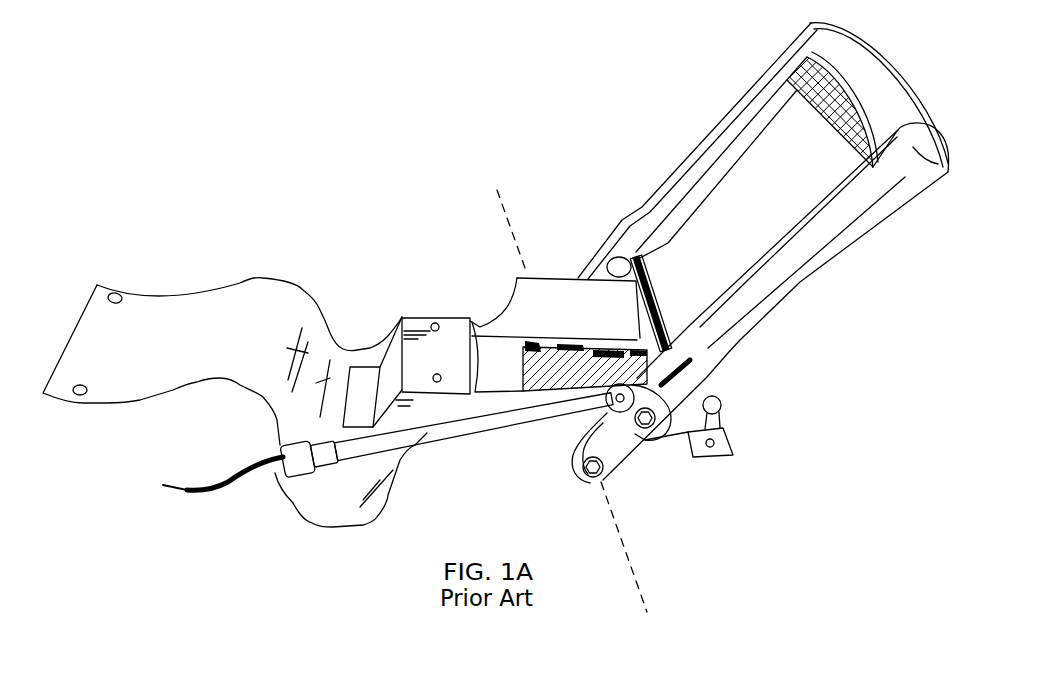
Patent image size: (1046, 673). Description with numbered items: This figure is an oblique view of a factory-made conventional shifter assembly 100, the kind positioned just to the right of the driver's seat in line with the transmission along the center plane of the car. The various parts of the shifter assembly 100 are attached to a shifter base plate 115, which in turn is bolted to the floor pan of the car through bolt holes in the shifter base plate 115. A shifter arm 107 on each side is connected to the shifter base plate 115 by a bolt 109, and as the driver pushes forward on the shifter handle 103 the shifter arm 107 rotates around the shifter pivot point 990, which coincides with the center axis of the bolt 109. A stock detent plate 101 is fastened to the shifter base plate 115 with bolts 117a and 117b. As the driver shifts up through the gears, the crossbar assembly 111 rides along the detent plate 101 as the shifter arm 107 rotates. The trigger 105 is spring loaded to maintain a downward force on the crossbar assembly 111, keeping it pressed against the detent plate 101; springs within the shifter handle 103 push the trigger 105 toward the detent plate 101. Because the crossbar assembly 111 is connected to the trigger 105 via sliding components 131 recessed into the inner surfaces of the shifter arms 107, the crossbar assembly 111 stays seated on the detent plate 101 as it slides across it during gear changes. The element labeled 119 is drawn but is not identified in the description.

The shifter assembly 100 is at (103, 554).
The detent plate 101 is at (569, 355).
The shifter handle 103 is at (882, 95).
The trigger 105 is at (818, 91).
The shifter arm 107 is at (760, 303).
The bolt 109 is at (621, 483).
The crossbar assembly 111 is at (662, 303).
The shifter base plate 115 is at (256, 380).
The bolt 117a is at (457, 433).
The bolt 117b is at (735, 410).
The cable 119 is at (206, 494).
The sliding components 131 is at (697, 151).
The shifter pivot point 990 is at (591, 401).